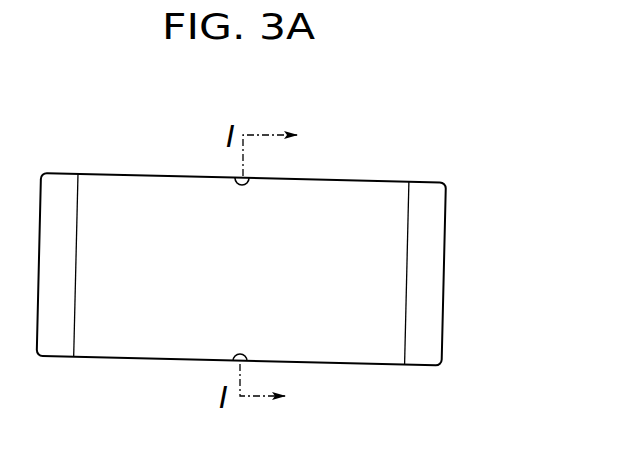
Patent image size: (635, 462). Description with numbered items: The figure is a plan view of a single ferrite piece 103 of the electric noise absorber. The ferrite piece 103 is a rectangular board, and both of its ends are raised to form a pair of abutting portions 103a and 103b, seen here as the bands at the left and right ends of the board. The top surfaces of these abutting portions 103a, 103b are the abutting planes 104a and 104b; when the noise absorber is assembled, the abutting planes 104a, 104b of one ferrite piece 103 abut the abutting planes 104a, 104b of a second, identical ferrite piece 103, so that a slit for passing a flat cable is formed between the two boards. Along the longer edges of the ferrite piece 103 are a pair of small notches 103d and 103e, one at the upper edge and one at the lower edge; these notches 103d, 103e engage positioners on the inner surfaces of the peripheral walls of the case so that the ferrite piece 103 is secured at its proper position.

The ferrite piece 103 is at (348, 172).
The abutting portion 103a is at (37, 332).
The abutting portion 103b is at (445, 315).
The notch 103d is at (248, 184).
The notch 103e is at (246, 352).
The abutting plane 104a is at (58, 290).
The abutting plane 104b is at (432, 259).